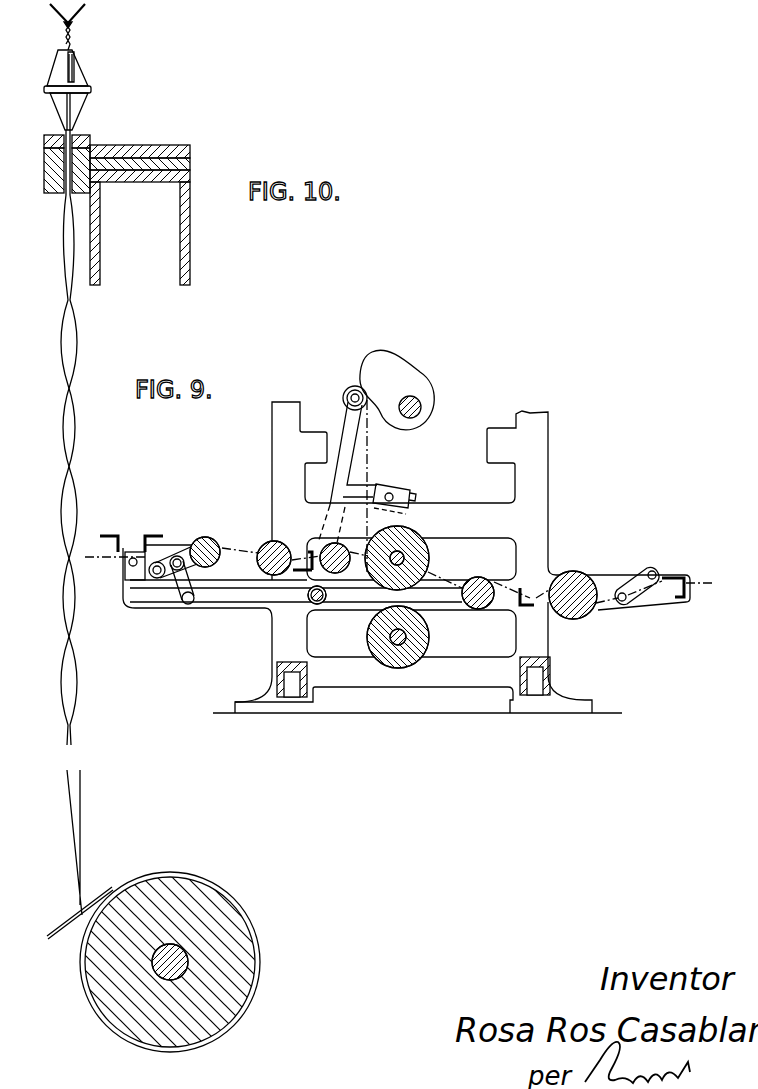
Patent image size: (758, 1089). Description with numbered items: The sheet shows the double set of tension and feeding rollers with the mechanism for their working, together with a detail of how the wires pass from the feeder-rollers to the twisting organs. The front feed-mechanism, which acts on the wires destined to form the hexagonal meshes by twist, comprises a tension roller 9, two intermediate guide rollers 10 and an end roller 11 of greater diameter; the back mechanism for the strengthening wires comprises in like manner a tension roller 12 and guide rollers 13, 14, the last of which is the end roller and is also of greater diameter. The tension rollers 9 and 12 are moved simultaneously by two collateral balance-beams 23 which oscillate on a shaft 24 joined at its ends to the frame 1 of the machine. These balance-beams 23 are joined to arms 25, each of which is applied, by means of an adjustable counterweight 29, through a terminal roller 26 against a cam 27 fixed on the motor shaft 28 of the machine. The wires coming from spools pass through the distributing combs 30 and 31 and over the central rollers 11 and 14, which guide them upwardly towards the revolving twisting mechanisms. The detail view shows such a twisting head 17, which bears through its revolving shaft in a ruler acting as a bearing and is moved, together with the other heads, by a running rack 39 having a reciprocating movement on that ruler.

In FIG. 9, the frame 1 is at (283, 470).
In FIG. 9, the tension roller 9 is at (203, 536).
In FIG. 9, the intermediate guide rollers 10 is at (318, 558).
In FIG. 10, the end roller 11 is at (215, 947).
In FIG. 9, the end roller 11 is at (417, 537).
In FIG. 9, the tension roller 12 is at (478, 577).
In FIG. 9, the guide roller 13 is at (620, 604).
In FIG. 9, the guide roller 14 is at (425, 630).
In FIG. 10, the head 17 is at (82, 72).
In FIG. 9, the balance-beams 23 is at (267, 595).
In FIG. 9, the shaft 24 is at (322, 604).
In FIG. 9, the arms 25 is at (348, 432).
In FIG. 9, the terminal roller 26 is at (353, 388).
In FIG. 9, the cam 27 is at (393, 375).
In FIG. 9, the motor shaft 28 is at (419, 403).
In FIG. 9, the adjustable counterweight 29 is at (395, 492).
In FIG. 9, the distributing comb 30 is at (123, 563).
In FIG. 9, the distributing comb 31 is at (673, 603).
In FIG. 10, the running rack 39 is at (126, 146).